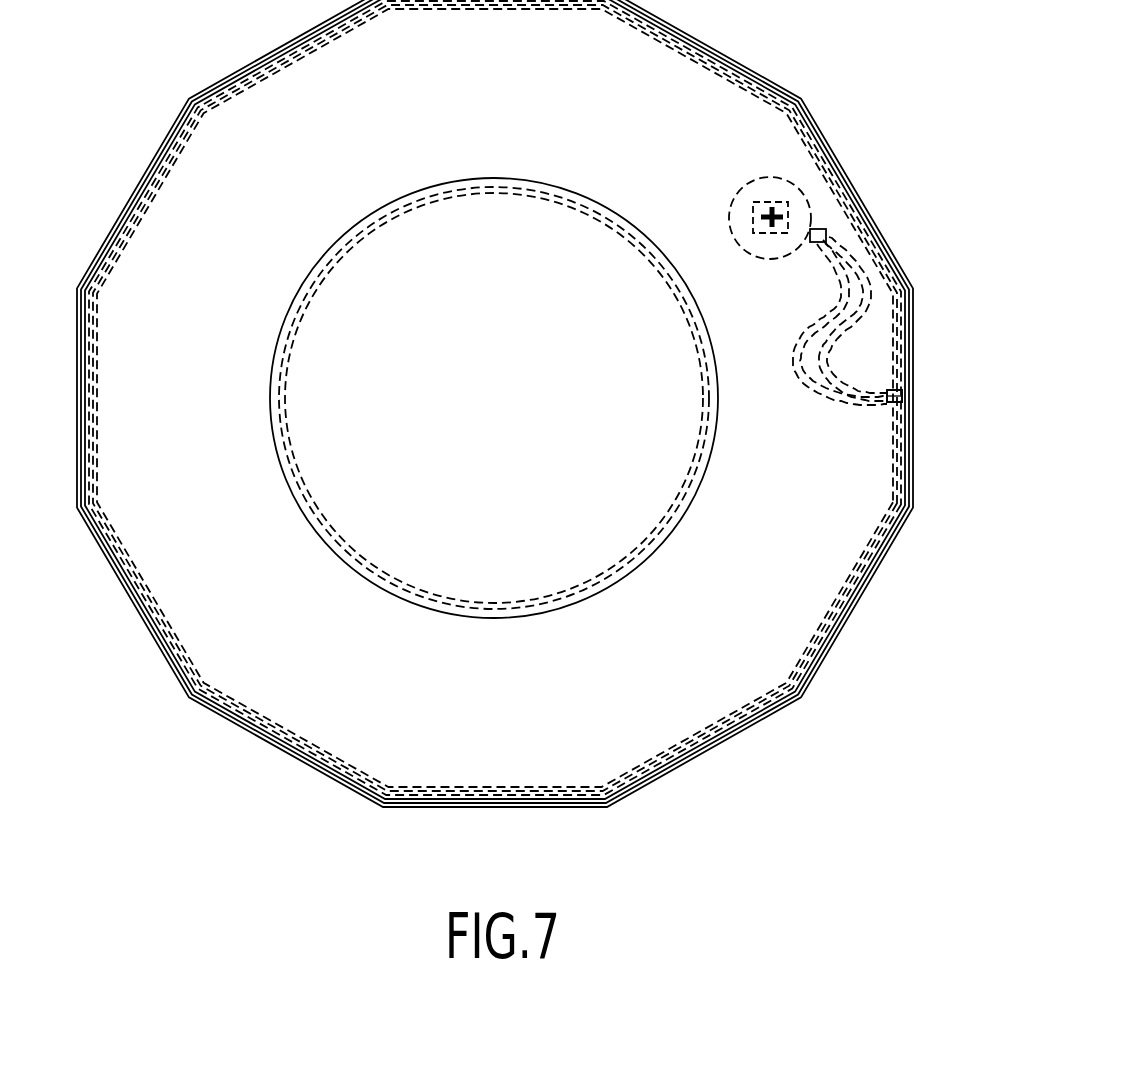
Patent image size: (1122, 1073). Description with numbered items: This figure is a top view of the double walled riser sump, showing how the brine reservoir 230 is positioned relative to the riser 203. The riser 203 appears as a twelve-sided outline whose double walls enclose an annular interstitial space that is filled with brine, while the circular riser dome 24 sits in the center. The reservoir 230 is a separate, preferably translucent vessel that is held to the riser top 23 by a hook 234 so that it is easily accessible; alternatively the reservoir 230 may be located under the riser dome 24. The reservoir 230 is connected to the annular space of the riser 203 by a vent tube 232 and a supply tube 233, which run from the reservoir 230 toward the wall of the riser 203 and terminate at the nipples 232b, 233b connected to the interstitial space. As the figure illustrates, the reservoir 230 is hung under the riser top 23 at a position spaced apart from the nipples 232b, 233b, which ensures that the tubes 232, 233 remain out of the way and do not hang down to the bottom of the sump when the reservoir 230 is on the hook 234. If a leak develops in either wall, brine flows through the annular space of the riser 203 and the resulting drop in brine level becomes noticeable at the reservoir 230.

The riser top 23 is at (782, 594).
The riser dome 24 is at (480, 460).
The riser 203 is at (840, 632).
The reservoir 230 is at (753, 190).
The vent tube 232 is at (797, 330).
The supply tube 233 is at (830, 360).
The hook 234 is at (771, 224).
The nipple 232b is at (888, 403).
The nipple 233b is at (888, 403).